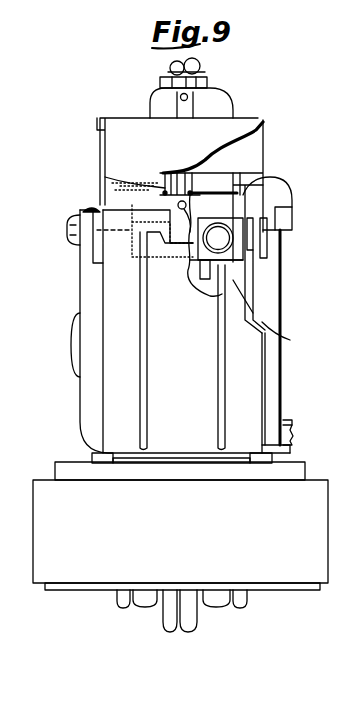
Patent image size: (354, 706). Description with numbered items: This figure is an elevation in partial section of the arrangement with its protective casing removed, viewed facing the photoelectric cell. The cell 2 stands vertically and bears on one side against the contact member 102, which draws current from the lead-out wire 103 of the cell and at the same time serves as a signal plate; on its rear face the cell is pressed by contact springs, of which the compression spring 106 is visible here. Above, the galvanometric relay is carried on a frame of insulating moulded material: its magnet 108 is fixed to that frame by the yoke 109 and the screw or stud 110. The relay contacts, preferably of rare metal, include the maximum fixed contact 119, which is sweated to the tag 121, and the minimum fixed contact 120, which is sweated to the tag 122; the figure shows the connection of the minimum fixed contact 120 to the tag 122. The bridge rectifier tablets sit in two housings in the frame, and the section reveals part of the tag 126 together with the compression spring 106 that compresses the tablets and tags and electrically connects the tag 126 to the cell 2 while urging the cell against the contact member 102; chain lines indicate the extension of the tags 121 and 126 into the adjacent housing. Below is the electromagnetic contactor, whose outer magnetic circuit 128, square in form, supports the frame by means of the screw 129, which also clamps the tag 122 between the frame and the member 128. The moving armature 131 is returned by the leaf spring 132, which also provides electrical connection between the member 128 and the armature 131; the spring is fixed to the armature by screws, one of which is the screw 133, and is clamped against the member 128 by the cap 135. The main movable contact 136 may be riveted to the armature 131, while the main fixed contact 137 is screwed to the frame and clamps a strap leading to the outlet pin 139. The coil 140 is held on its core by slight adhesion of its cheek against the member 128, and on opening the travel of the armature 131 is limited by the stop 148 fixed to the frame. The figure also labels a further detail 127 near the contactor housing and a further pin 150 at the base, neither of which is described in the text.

The photoelectric cell 2 is at (140, 318).
The contact member 102 is at (100, 120).
The lead-out wire 103 is at (147, 328).
The compression spring 106 is at (245, 282).
The magnet 108 is at (264, 136).
The yoke 109 is at (223, 97).
The screw or stud 110 is at (193, 72).
The maximum fixed contact 119 is at (230, 188).
The minimum fixed contact 120 is at (112, 177).
The tag 121 is at (150, 196).
The tag 122 is at (150, 182).
The tag 126 is at (78, 215).
The slot 127 is at (238, 288).
The outer magnetic circuit 128 is at (82, 395).
The screw 129 is at (80, 247).
The moving armature 131 is at (282, 370).
The leaf spring 132 is at (293, 419).
The screw 133 is at (294, 430).
The cap 135 is at (311, 487).
The main movable contact 136 is at (260, 243).
The main fixed contact 137 is at (265, 252).
The outlet pin 139 is at (233, 602).
The coil 140 is at (262, 322).
The stop 148 is at (293, 229).
The terminal pin 150 is at (170, 618).